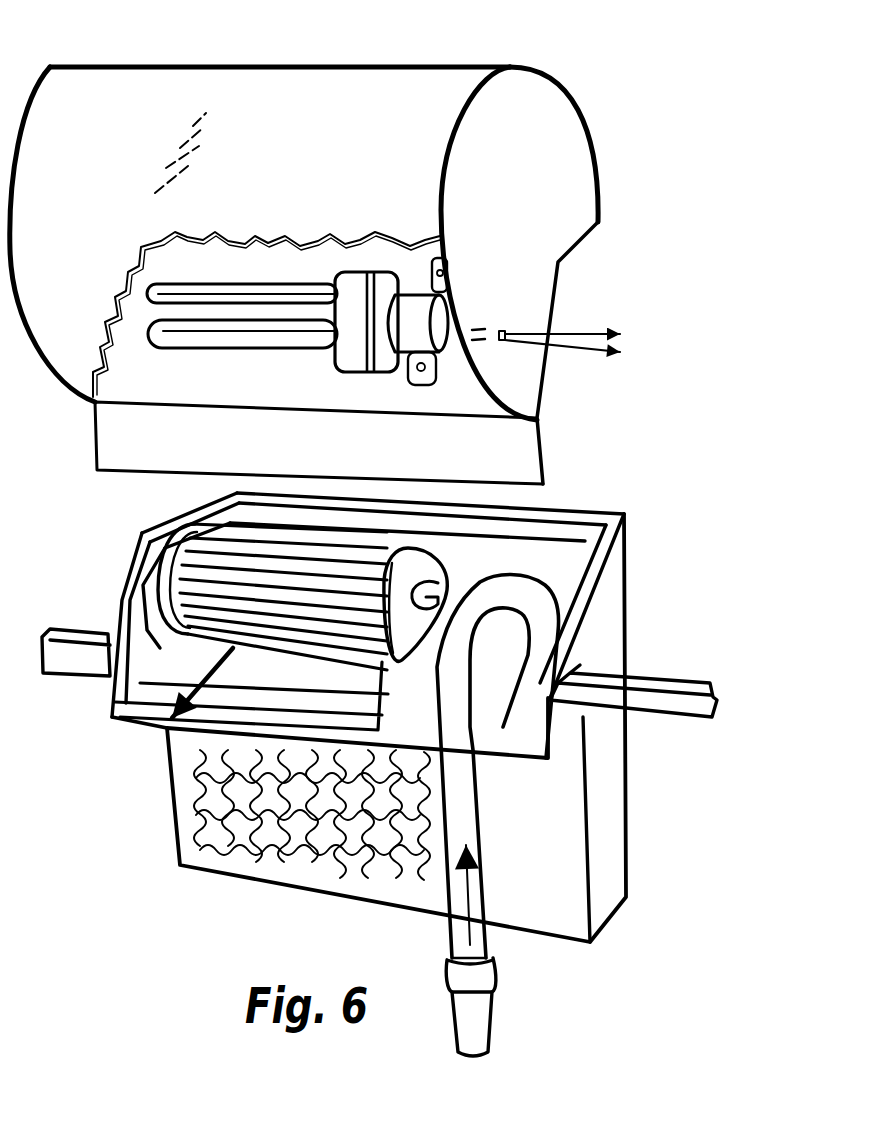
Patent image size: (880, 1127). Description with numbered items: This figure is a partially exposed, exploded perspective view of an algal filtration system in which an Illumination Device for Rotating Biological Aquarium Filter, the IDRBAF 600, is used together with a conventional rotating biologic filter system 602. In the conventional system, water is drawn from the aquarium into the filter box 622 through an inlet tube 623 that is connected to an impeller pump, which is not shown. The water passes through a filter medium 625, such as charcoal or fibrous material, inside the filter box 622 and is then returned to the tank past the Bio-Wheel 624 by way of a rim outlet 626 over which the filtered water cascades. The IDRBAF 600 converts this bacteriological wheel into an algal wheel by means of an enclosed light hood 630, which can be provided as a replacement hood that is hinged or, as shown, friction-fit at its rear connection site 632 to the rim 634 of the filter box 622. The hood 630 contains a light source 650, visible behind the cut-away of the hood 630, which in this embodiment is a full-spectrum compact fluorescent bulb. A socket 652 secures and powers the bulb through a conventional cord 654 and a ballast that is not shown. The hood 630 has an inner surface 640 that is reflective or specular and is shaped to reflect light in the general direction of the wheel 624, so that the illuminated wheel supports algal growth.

The Illumination Device for Rotating Biological Aquarium Filter (IDRBAF) 600 is at (402, 245).
The light hood 630 is at (381, 75).
The rear connection site 632 is at (590, 229).
The inner surface 640 is at (124, 290).
The light source 650 is at (257, 283).
The socket 652 is at (427, 338).
The cord 654 is at (580, 352).
The rotating biologic filter system 602 is at (400, 755).
The rim 634 is at (586, 512).
The filter box 622 is at (557, 881).
The inlet tube 623 is at (473, 821).
The Bio-Wheel 624 is at (197, 637).
The filter medium 625 is at (252, 835).
The rim outlet 626 is at (254, 685).